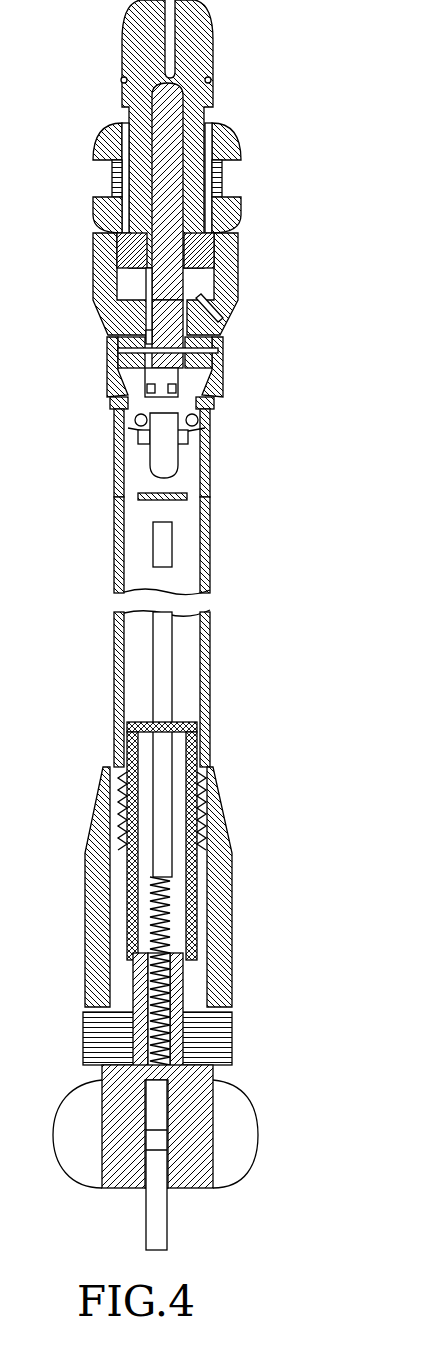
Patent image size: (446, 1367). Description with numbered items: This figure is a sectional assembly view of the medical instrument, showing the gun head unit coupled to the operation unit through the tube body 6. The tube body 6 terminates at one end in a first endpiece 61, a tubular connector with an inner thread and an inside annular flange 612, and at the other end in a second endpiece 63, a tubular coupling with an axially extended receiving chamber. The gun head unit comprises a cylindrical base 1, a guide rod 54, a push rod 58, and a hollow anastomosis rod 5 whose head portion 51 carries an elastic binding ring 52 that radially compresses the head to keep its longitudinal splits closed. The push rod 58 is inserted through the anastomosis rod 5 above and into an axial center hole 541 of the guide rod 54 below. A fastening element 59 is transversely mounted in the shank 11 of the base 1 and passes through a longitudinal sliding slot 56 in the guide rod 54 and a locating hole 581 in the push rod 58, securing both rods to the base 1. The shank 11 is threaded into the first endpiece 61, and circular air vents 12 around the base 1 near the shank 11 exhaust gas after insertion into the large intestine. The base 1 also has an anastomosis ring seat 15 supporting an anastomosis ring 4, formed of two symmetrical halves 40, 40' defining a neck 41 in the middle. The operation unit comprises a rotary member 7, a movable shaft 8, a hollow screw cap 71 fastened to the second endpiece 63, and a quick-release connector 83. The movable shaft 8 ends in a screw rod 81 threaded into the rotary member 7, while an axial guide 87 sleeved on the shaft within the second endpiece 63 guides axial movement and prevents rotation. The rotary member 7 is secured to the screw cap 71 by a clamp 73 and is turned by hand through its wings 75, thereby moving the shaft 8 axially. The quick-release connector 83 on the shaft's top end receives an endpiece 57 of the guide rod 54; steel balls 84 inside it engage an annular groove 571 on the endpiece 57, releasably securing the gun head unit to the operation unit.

The cylindrical base 1 is at (240, 272).
The anastomosis ring 4 is at (242, 205).
The hollow anastomosis rod 5 is at (214, 149).
The tube body 6 is at (212, 539).
The rotary member 7 is at (214, 1076).
The movable shaft 8 is at (170, 654).
The shank 11 is at (120, 360).
The circular air vents 12 is at (212, 320).
The anastomosis ring seat 15 is at (226, 239).
The symmetrical half 40 is at (137, 169).
The symmetrical half 40' is at (83, 216).
The neck 41 is at (96, 178).
The head portion 51 is at (122, 30).
The elastic binding ring 52 is at (212, 81).
The guide rod 54 is at (148, 290).
The longitudinal sliding slot 56 is at (148, 322).
The endpiece 57 is at (160, 470).
The push rod 58 is at (170, 181).
The fastening element 59 is at (218, 350).
The first endpiece 61 is at (212, 411).
The second endpiece 63 is at (224, 864).
The hollow screw cap 71 is at (233, 1034).
The clamp 73 is at (186, 987).
The wings 75 is at (250, 1128).
The screw rod 81 is at (170, 920).
The quick-release connector 83 is at (198, 428).
The steel balls 84 is at (136, 424).
The axial guide 87 is at (205, 752).
The axial center hole 541 is at (176, 378).
The annular groove 571 is at (165, 440).
The locating hole 581 is at (148, 338).
The inside annular flange 612 is at (112, 394).